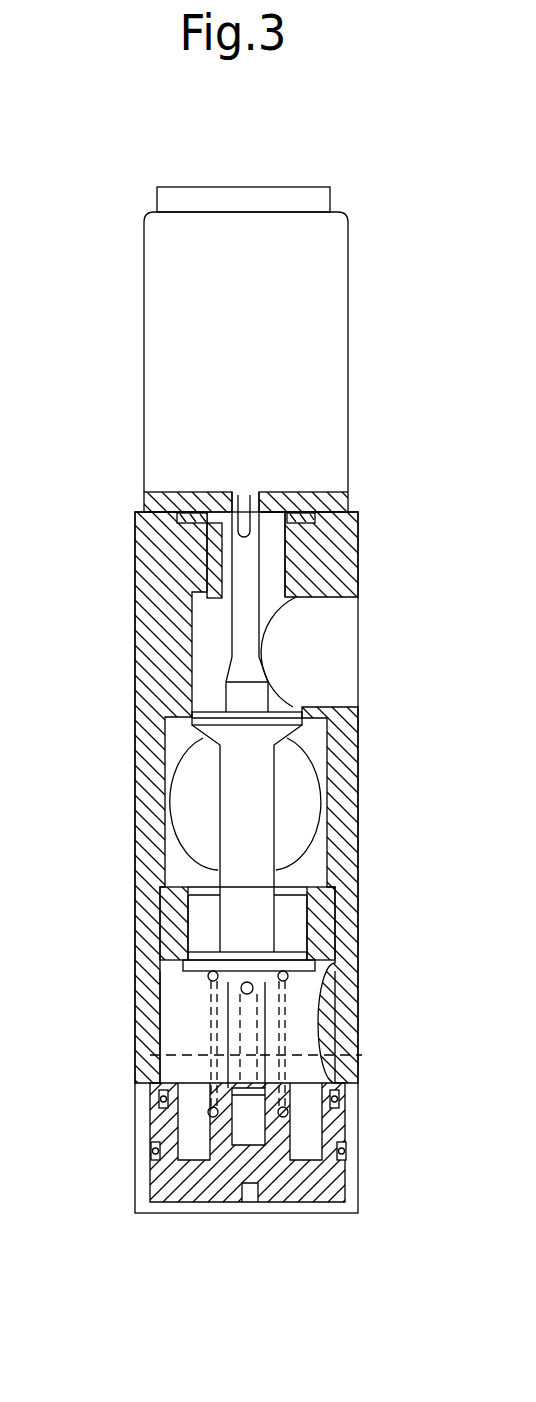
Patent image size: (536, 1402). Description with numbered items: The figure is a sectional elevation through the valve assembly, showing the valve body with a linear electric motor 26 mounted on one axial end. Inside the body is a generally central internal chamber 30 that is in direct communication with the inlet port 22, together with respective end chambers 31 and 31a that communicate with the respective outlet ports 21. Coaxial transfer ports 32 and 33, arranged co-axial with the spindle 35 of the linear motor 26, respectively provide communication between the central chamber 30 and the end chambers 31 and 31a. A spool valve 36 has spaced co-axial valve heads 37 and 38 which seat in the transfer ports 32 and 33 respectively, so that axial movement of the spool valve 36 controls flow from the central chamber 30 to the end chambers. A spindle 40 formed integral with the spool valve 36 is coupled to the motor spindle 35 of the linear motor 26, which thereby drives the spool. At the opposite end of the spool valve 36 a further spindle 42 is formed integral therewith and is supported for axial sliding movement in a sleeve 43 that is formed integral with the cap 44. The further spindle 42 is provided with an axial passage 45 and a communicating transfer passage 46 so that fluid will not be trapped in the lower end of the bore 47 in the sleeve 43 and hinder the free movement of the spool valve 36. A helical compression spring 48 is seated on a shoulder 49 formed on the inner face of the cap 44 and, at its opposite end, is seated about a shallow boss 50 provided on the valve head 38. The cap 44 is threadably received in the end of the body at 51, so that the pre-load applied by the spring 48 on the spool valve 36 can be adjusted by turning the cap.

The outlet port 21 is at (340, 642).
The inlet port 22 is at (182, 808).
The linear electric motor 26 is at (160, 340).
The central internal chamber 30 is at (165, 866).
The end chamber 31 is at (213, 642).
The end chamber 31a is at (175, 1017).
The transfer port 32 is at (278, 704).
The transfer port 33 is at (305, 958).
The motor spindle 35 is at (245, 503).
The spool valve 36 is at (263, 818).
The valve head 37 is at (288, 742).
The valve head 38 is at (268, 948).
The spindle 40 is at (260, 641).
The further spindle 42 is at (292, 992).
The sleeve 43 is at (347, 811).
The cap 44 is at (333, 1187).
The axial passage 45 is at (160, 1056).
The transfer passage 46 is at (238, 986).
The bore 47 is at (253, 1123).
The helical compression spring 48 is at (362, 1060).
The shoulder 49 is at (160, 1100).
The shallow boss 50 is at (240, 970).
The threaded connection 51 is at (152, 1150).